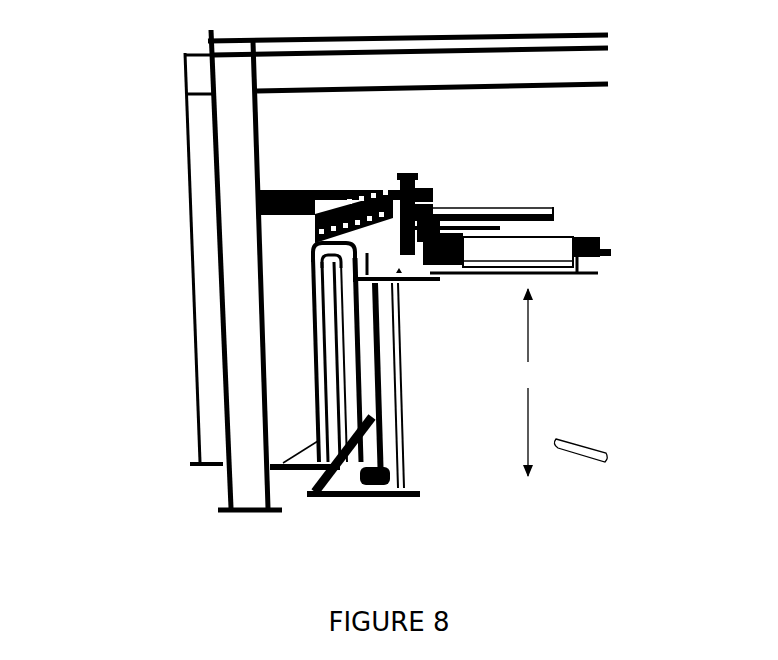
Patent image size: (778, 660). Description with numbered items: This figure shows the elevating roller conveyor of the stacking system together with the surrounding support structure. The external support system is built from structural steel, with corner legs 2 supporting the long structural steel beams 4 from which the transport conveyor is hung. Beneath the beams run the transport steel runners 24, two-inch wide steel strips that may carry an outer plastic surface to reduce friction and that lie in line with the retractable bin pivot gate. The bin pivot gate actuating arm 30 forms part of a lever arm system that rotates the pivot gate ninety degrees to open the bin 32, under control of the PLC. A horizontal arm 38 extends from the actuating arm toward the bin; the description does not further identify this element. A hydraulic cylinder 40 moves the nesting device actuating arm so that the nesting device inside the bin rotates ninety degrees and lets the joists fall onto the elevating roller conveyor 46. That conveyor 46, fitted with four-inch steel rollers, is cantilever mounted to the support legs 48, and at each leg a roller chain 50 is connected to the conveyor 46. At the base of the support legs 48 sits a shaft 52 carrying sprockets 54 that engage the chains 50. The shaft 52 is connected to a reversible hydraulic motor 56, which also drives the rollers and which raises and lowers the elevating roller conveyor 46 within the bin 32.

The corner legs 2 is at (205, 228).
The long structural steel beams 4 is at (298, 70).
The transport steel runners 24 is at (290, 185).
The bin pivot gate actuating arm 30 is at (434, 200).
The bin 32 is at (521, 382).
The support arm 38 is at (502, 208).
The hydraulic cylinder 40 is at (310, 246).
The elevating roller conveyor 46 is at (532, 254).
The support legs 48 is at (310, 437).
The roller chain 50 is at (310, 365).
The shaft 52 is at (285, 463).
The sprockets 54 is at (313, 474).
The hydraulic motor 56 is at (612, 253).